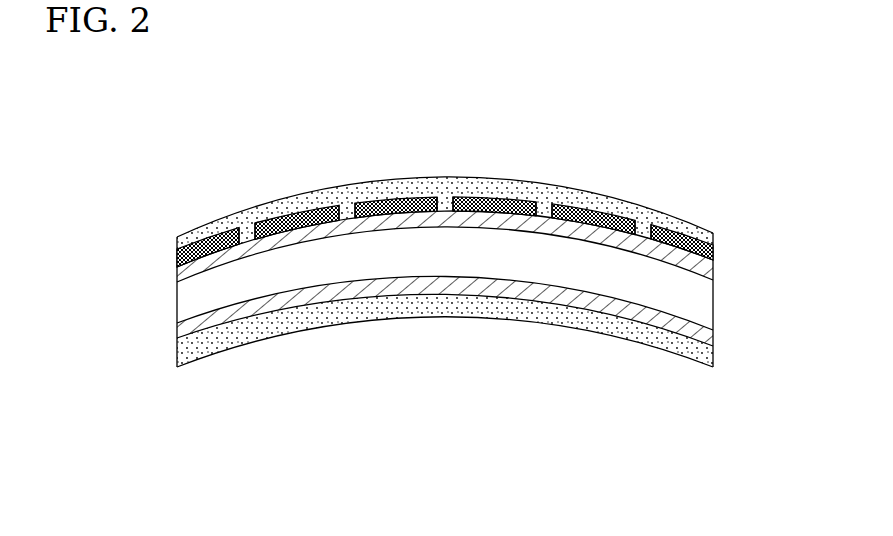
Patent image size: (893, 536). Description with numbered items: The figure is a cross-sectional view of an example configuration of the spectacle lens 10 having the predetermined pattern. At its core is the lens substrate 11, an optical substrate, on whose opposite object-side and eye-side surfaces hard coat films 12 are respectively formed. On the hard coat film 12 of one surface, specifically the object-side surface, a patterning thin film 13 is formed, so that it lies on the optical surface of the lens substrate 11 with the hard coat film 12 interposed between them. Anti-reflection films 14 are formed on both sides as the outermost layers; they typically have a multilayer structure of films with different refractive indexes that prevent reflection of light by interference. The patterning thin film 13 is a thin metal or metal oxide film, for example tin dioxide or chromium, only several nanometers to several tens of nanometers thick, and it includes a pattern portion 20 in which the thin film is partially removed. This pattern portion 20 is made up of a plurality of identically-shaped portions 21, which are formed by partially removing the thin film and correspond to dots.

The spectacle lens 10 is at (441, 371).
The lens substrate 11 is at (716, 300).
The hard coat film 12 is at (716, 270).
The patterning thin film 13 is at (716, 253).
The anti-reflection film 14 is at (716, 236).
The pattern portion 20 is at (657, 113).
The identically-shaped portion 21 is at (247, 224).